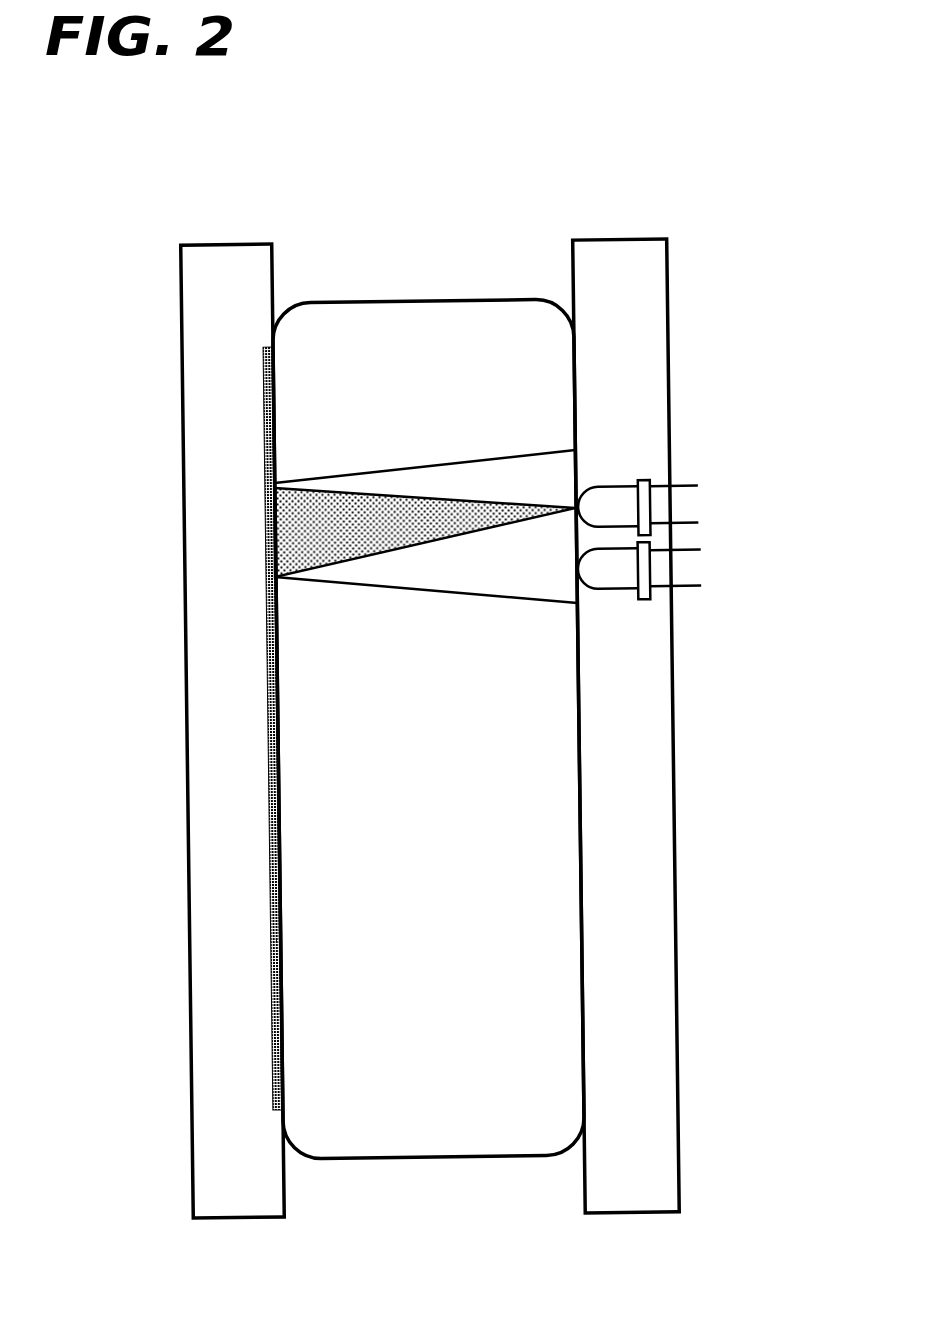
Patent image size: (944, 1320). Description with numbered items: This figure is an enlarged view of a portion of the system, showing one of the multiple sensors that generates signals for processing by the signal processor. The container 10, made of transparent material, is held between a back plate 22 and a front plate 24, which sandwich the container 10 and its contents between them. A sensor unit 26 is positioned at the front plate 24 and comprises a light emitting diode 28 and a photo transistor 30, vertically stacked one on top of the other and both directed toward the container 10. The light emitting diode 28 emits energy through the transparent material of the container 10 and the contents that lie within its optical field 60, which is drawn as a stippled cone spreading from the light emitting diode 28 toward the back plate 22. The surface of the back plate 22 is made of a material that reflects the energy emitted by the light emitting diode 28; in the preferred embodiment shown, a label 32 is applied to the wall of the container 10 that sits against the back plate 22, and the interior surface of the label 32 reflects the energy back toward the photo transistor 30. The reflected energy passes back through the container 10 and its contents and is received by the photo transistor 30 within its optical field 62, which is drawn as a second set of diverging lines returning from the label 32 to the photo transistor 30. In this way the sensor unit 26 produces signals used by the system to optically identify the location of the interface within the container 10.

The container 10 is at (522, 933).
The back plate 22 is at (255, 268).
The front plate 24 is at (648, 280).
The sensor unit 26 is at (712, 534).
The light emitting diode 28 is at (608, 498).
The photo transistor 30 is at (628, 578).
The label 32 is at (270, 806).
The optical field 60 is at (320, 532).
The optical field 62 is at (428, 572).